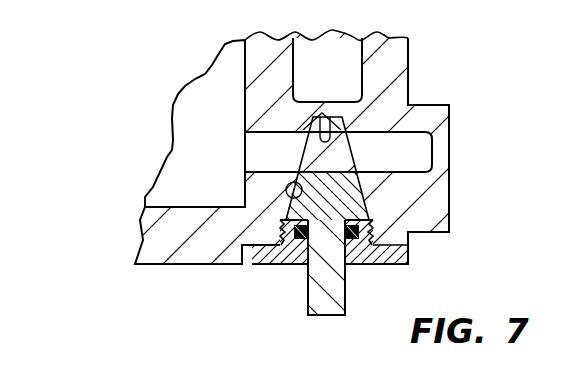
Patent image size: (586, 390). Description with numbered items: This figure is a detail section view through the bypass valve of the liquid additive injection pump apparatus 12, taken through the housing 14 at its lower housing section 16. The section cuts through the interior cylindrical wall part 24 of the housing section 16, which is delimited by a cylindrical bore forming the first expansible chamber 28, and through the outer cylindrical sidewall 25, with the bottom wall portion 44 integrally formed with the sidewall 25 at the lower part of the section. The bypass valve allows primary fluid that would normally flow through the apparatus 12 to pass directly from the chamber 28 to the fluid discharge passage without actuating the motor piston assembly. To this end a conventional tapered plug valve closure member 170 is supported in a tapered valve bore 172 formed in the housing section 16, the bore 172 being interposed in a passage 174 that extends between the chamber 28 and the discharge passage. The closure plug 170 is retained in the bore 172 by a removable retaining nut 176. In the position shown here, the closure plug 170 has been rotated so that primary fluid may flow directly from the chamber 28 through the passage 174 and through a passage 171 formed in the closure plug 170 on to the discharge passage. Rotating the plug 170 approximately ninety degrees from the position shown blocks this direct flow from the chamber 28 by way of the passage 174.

The liquid additive injection pump apparatus 12 is at (143, 142).
The housing 14 is at (180, 264).
The lower housing section 16 is at (410, 67).
The interior cylindrical wall part 24 is at (256, 36).
The outer cylindrical sidewall 25 is at (375, 37).
The first expansible chamber 28 is at (222, 131).
The bottom wall portion 44 is at (140, 250).
The tapered plug valve closure member 170 is at (371, 214).
The passage 171 is at (323, 114).
The tapered valve bore 172 is at (287, 204).
The passage 174 is at (396, 136).
The retaining nut 176 is at (284, 264).